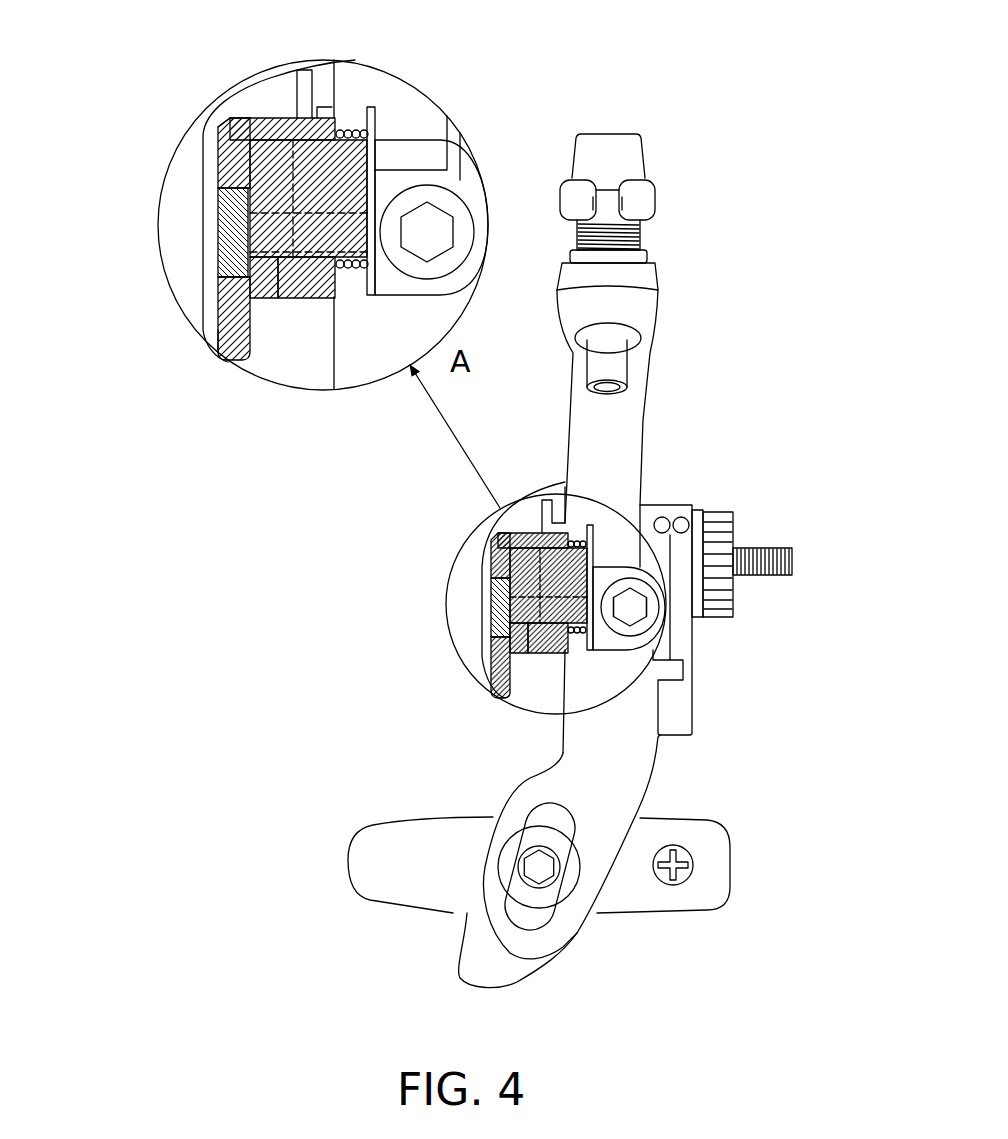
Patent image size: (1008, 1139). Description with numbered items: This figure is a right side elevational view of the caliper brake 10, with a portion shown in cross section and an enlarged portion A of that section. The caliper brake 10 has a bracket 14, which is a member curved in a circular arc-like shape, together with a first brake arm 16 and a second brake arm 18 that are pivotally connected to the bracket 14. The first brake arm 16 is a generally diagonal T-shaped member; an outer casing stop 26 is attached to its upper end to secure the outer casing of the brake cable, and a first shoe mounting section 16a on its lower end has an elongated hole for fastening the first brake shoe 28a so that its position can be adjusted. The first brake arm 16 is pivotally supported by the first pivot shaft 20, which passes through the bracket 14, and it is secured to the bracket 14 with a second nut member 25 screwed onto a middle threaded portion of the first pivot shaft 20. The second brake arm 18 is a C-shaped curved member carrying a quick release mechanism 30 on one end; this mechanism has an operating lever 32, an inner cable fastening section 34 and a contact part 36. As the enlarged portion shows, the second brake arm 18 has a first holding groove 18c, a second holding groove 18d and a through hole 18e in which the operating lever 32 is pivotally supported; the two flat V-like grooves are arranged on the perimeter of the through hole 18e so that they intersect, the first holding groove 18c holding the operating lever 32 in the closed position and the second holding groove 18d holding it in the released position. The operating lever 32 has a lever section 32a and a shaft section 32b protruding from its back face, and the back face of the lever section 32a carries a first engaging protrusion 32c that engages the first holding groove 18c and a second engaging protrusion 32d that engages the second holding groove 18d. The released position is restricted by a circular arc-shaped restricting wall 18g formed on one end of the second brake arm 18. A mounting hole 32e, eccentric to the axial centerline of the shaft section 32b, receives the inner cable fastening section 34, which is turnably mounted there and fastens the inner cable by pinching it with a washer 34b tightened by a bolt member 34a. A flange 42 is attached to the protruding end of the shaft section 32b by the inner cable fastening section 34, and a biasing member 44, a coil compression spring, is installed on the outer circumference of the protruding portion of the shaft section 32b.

The caliper brake 10 is at (585, 534).
The bracket 14 is at (664, 501).
The first brake arm 16 is at (666, 371).
The first shoe mounting section 16a is at (637, 780).
The second brake arm 18 is at (523, 512).
The first holding groove 18c is at (229, 120).
The second holding groove 18d is at (225, 272).
The through hole 18e is at (330, 297).
The restricting wall 18g is at (263, 120).
The first pivot shaft 20 is at (760, 548).
The second nut member 25 is at (718, 505).
The outer casing stop 26 is at (658, 167).
The first brake shoe 28a is at (718, 893).
The quick release mechanism 30 is at (480, 658).
The operating lever 32 is at (203, 320).
The lever section 32a is at (228, 170).
The shaft section 32b is at (293, 277).
The first engaging protrusion 32c is at (338, 117).
The second engaging protrusion 32d is at (307, 297).
The mounting hole 32e is at (377, 303).
The inner cable fastening section 34 is at (631, 656).
The bolt member 34a is at (653, 612).
The washer 34b is at (658, 623).
The contact part 36 is at (233, 337).
The flange 42 is at (450, 141).
The biasing member 44 is at (357, 123).